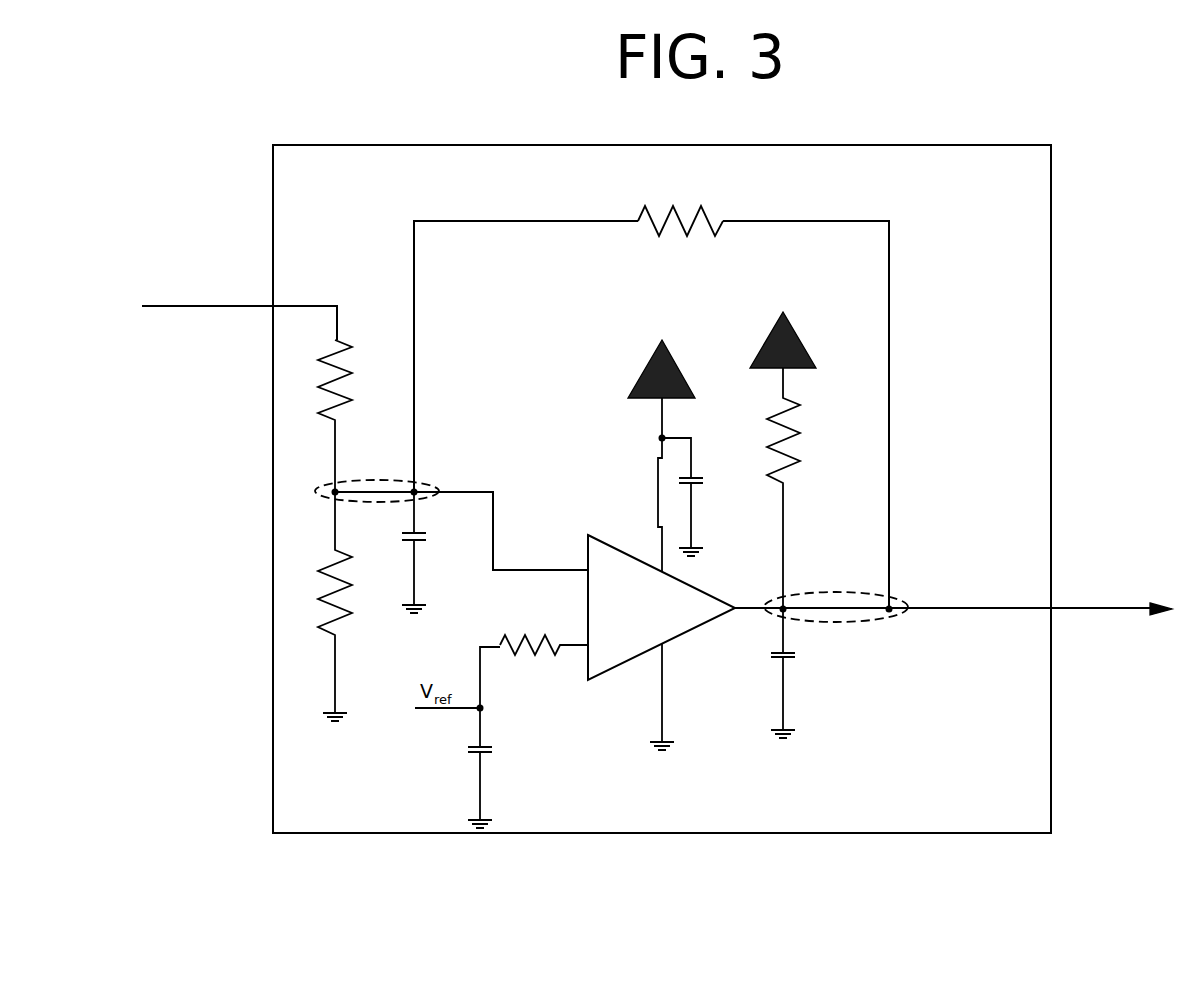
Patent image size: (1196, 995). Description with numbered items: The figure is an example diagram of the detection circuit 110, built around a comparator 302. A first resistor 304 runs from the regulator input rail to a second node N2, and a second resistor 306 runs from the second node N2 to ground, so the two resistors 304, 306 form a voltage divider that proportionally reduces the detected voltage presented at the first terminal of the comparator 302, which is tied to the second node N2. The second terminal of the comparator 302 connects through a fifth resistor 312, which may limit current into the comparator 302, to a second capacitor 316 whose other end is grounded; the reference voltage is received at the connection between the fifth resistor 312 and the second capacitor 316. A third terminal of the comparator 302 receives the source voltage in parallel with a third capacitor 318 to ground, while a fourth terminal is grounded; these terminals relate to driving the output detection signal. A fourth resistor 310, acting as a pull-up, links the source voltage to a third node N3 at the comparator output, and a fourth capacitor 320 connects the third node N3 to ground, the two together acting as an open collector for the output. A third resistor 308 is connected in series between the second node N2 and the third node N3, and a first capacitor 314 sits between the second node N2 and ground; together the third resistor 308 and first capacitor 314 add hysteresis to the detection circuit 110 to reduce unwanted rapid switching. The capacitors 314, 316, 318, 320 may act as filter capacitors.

The detection circuit 110 is at (1053, 160).
The comparator 302 is at (610, 545).
The first resistor 304 is at (350, 374).
The second resistor 306 is at (345, 556).
The third resistor 308 is at (675, 205).
The fourth resistor 310 is at (800, 432).
The fifth resistor 312 is at (538, 655).
The first capacitor 314 is at (428, 537).
The second capacitor 316 is at (493, 750).
The third capacitor 318 is at (703, 478).
The fourth capacitor 320 is at (796, 656).
The second node N2 is at (438, 492).
The third node N3 is at (888, 594).